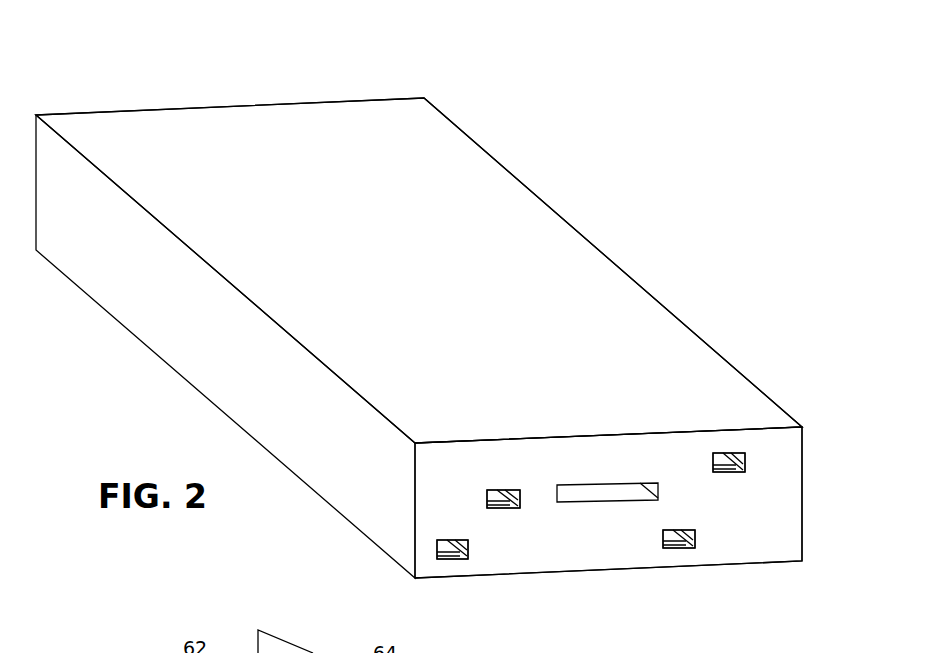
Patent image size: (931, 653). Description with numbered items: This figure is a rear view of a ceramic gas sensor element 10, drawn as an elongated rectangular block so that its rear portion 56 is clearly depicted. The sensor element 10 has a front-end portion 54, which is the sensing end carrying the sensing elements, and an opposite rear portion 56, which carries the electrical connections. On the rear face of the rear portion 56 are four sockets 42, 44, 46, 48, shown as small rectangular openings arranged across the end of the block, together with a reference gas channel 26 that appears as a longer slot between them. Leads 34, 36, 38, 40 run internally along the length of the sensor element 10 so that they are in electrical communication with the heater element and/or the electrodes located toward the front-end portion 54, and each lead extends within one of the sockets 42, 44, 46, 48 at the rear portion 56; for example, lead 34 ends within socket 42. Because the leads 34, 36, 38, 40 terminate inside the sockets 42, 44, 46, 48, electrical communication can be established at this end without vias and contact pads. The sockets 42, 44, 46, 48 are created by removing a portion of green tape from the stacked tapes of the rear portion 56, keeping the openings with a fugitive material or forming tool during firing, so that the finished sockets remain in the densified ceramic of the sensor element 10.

The sensor element 10 is at (600, 175).
The reference gas channel 26 is at (580, 492).
The lead 34 is at (727, 471).
The lead 36 is at (512, 508).
The lead 38 is at (676, 548).
The lead 40 is at (444, 558).
The socket 42 is at (737, 471).
The socket 44 is at (516, 499).
The socket 46 is at (690, 548).
The socket 48 is at (463, 558).
The front-end portion 54 is at (229, 120).
The rear portion 56 is at (731, 395).